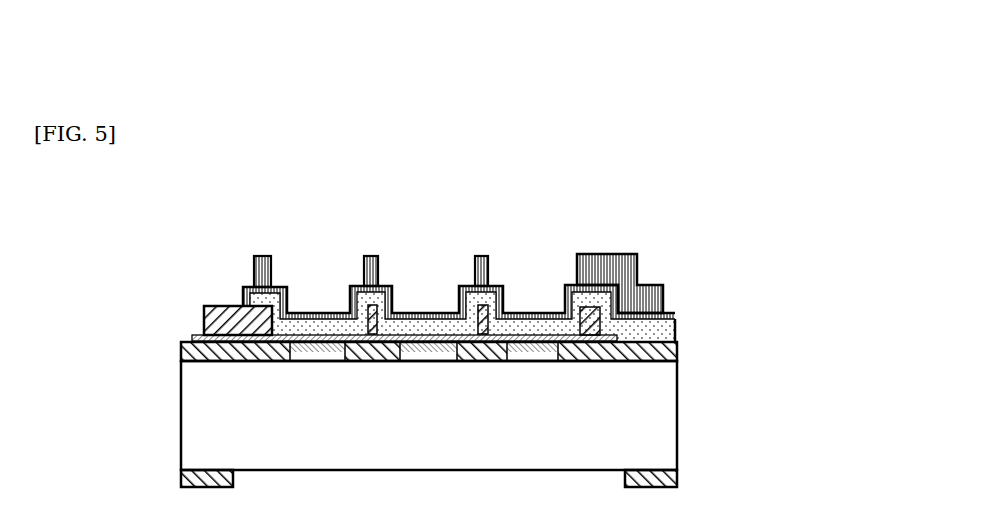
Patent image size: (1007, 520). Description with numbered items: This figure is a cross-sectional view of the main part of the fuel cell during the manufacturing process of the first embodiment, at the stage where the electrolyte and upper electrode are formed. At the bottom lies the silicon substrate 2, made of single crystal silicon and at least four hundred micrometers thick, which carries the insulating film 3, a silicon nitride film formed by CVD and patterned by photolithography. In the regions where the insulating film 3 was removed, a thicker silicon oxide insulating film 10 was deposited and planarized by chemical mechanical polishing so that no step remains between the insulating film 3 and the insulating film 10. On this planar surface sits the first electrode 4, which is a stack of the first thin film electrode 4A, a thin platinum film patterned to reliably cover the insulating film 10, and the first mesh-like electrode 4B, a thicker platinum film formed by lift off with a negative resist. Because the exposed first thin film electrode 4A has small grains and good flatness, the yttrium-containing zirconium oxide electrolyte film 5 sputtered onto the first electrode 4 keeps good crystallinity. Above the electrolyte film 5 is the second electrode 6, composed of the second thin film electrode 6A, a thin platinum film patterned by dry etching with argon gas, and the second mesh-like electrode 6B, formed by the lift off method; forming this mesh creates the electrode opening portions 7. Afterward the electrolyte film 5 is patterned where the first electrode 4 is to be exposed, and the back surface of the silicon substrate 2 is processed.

The silicon substrate 2 is at (663, 415).
The insulating film 3 is at (677, 355).
The first electrode 4 is at (327, 290).
The first thin film electrode 4A is at (193, 337).
The first mesh-like electrode 4B is at (203, 310).
The electrolyte film 5 is at (667, 333).
The second electrode 6 is at (526, 269).
The second thin film electrode 6A is at (670, 313).
The second mesh-like electrode 6B is at (632, 270).
The electrode opening portions 7 is at (308, 272).
The insulating film 10 is at (527, 353).